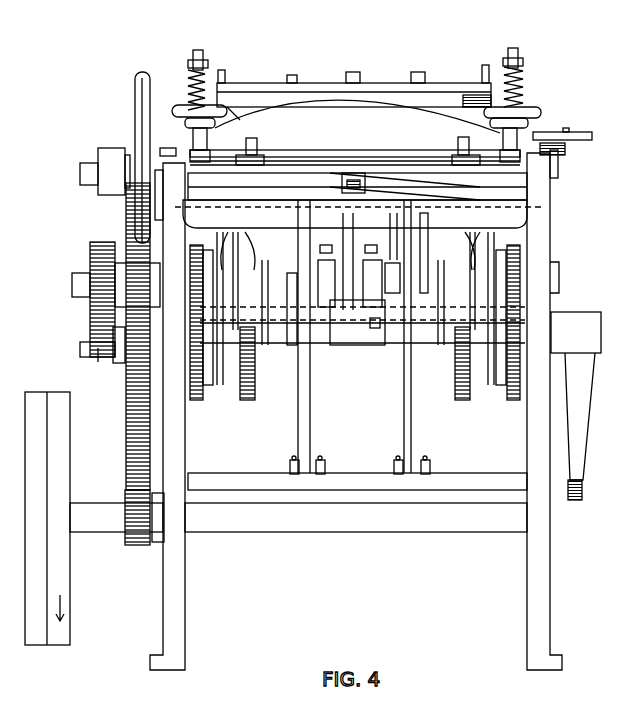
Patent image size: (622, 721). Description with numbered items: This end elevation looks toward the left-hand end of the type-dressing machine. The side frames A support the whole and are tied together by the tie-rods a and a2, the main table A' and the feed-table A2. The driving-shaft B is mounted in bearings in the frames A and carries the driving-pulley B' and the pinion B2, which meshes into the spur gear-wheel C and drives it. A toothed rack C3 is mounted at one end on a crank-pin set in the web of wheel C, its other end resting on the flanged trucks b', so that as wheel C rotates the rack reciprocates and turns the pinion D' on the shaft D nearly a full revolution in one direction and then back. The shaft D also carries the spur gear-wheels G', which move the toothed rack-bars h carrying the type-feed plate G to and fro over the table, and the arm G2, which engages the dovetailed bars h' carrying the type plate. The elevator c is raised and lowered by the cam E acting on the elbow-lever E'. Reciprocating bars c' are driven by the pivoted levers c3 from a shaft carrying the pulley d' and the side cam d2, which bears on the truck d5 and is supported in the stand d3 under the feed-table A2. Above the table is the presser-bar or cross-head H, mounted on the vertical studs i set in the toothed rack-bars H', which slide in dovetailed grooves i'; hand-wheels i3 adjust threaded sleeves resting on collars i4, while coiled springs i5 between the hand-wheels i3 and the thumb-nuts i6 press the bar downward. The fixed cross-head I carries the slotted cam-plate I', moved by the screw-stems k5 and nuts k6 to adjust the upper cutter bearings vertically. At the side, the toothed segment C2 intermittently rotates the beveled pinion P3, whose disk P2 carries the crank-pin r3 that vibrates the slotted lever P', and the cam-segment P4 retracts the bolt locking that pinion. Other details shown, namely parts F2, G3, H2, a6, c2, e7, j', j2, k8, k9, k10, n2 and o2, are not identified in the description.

The side frame A is at (356, 410).
The main table A' is at (301, 135).
The feed-table A2 is at (420, 218).
The driving-shaft B is at (298, 517).
The driving-pulley B' is at (47, 518).
The pinion B2 is at (144, 527).
The spur gear-wheel C is at (125, 222).
The toothed segment C2 is at (584, 492).
The toothed rack C3 is at (95, 327).
The shaft D is at (224, 274).
The pinion D' is at (90, 297).
The cam E is at (328, 283).
The elbow-lever E' is at (370, 272).
The pulley F2 is at (112, 160).
The type-feed plate G is at (380, 139).
The spur gear-wheel G' is at (355, 363).
The arm G2 is at (286, 302).
The rod G3 is at (421, 253).
The presser-bar H is at (357, 116).
The toothed rack-bar H' is at (355, 146).
The toothed wheel H2 is at (355, 334).
The fixed cross-head I is at (354, 84).
The slotted cam-plate I' is at (399, 77).
The slotted lever P' is at (567, 129).
The disk P2 is at (572, 147).
The beveled pinion P3 is at (565, 157).
The cam-segment P4 is at (579, 397).
The tie-rod a is at (248, 478).
The tie-rod a2 is at (424, 189).
The stud a6 is at (212, 217).
The flanged truck b' is at (97, 363).
The elevator c is at (353, 176).
The bar c' is at (405, 187).
The cam part c2 is at (419, 207).
The pivoted lever c3 is at (305, 391).
The pulley d' is at (353, 296).
The cam d2 is at (214, 372).
The stand d3 is at (355, 308).
The truck d5 is at (252, 238).
The rod e7 is at (290, 348).
The toothed rack-bar h is at (356, 163).
The dovetailed bar h' is at (356, 163).
The vertical stud i is at (360, 51).
The dovetailed groove i' is at (356, 69).
The hand-wheel i3 is at (359, 103).
The collar i4 is at (364, 121).
The coiled spring i5 is at (356, 85).
The thumb-nut i6 is at (364, 56).
The pin j' is at (174, 123).
The pin j2 is at (165, 148).
The screw-stem k5 is at (470, 95).
The nut k6 is at (350, 139).
The plate k8 is at (134, 92).
The plate k9 is at (146, 98).
The pin k10 is at (142, 138).
The post n2 is at (353, 66).
The post o2 is at (357, 140).
The crank-pin r3 is at (570, 121).